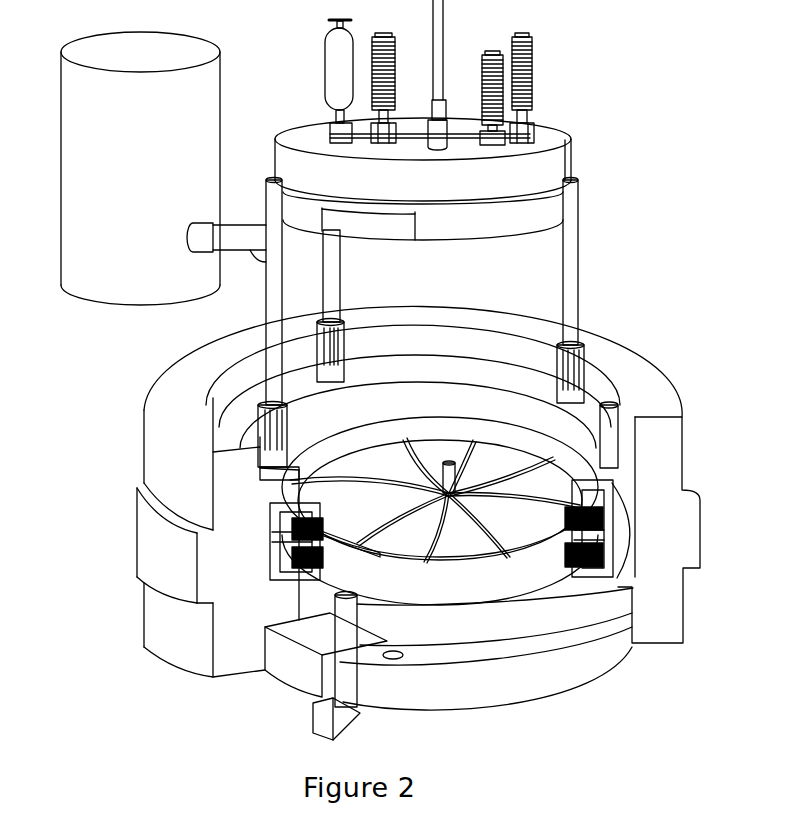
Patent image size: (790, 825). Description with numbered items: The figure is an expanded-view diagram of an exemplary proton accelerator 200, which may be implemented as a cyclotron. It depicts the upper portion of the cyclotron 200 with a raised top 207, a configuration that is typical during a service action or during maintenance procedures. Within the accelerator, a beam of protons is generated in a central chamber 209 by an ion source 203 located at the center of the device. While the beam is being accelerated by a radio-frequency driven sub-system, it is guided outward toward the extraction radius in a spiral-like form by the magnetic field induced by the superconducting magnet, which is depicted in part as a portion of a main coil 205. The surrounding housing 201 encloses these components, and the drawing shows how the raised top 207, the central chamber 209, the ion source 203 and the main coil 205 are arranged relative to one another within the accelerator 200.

The proton accelerator 200 is at (380, 370).
The housing 201 is at (141, 539).
The ion source 203 is at (444, 486).
The main coil 205 is at (569, 553).
The raised top 207 is at (564, 209).
The central chamber 209 is at (450, 559).